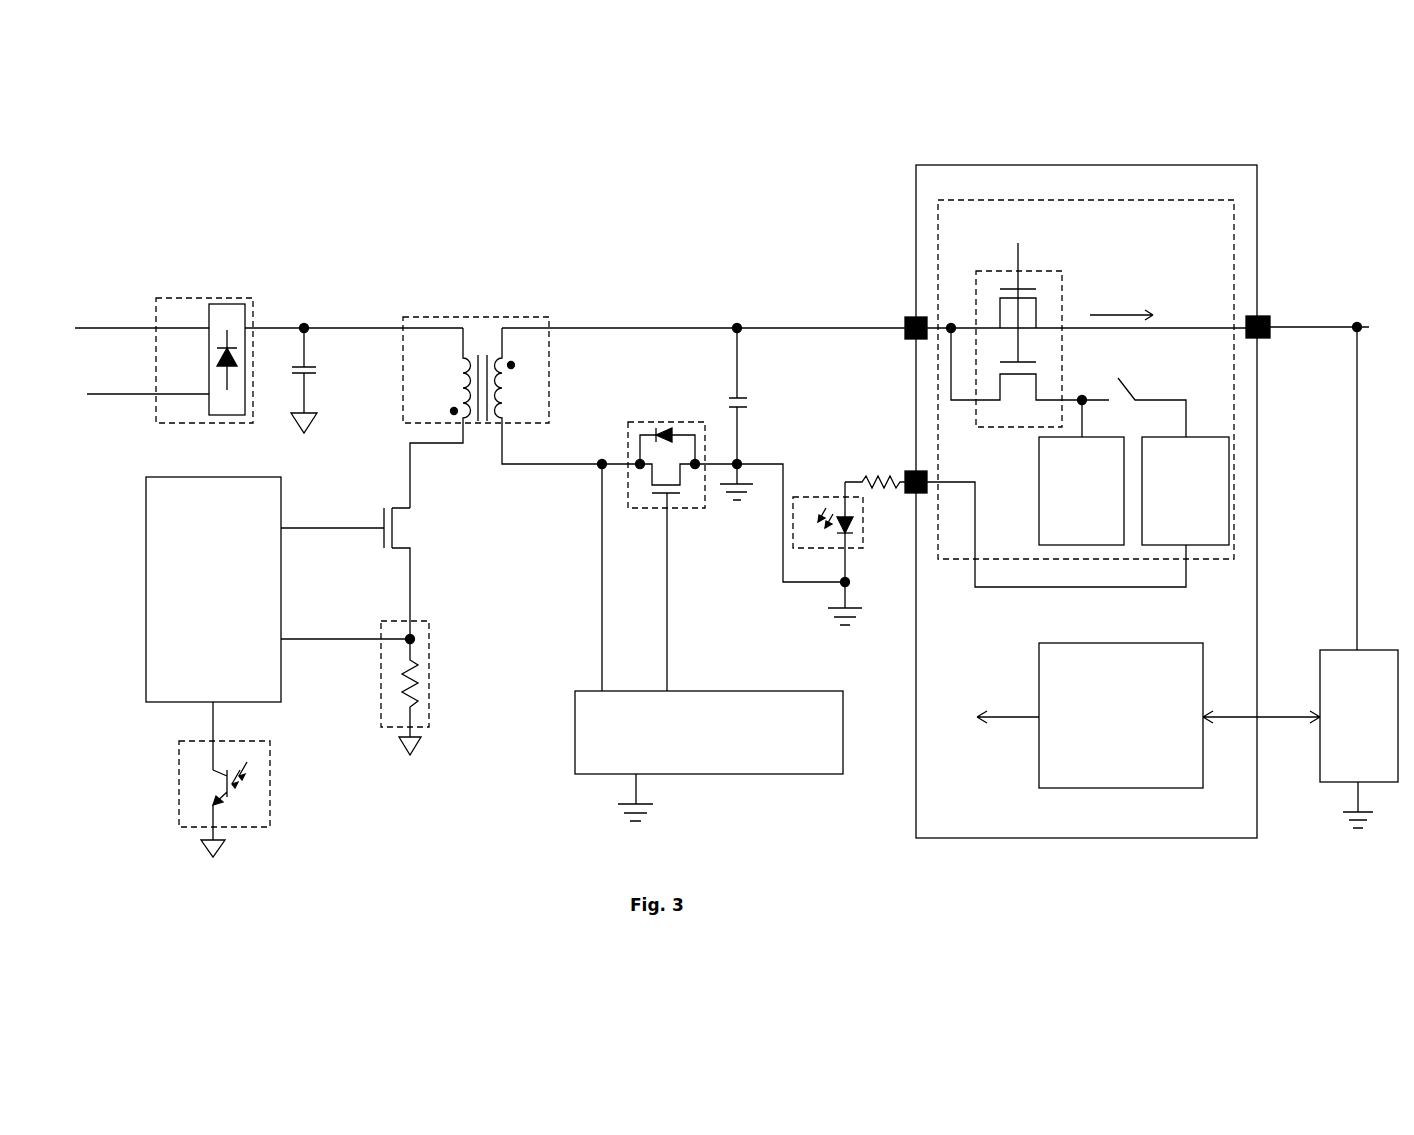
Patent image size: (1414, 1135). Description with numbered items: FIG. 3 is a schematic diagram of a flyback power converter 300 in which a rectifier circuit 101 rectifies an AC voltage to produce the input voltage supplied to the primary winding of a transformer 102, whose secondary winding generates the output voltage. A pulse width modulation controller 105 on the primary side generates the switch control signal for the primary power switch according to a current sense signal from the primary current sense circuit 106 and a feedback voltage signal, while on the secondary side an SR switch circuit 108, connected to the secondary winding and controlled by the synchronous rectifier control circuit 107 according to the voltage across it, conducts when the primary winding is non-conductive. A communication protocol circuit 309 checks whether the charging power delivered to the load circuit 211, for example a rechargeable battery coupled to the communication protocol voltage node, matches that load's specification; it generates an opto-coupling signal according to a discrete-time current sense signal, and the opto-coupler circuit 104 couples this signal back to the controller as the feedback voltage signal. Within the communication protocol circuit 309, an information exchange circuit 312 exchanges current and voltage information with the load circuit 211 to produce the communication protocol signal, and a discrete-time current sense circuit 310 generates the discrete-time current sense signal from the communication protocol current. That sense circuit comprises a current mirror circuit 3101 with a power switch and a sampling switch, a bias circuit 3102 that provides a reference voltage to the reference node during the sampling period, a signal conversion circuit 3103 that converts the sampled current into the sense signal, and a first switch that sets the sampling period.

The flyback power converter 300 is at (1245, 125).
The rectifier circuit 101 is at (190, 418).
The transformer 102 is at (492, 316).
The opto-coupler circuit 104 is at (250, 828).
The pulse width modulation controller 105 is at (188, 509).
The primary current sense circuit 106 is at (381, 716).
The synchronous rectifier control circuit 107 is at (835, 770).
The SR switch circuit 108 is at (675, 508).
The load circuit 211 is at (1387, 688).
The communication protocol circuit 309 is at (960, 190).
The discrete-time current sense circuit 310 is at (1227, 225).
The current mirror circuit 3101 is at (1040, 270).
The bias circuit 3102 is at (1094, 469).
The signal conversion circuit 3103 is at (1199, 467).
The information exchange circuit 312 is at (1173, 676).